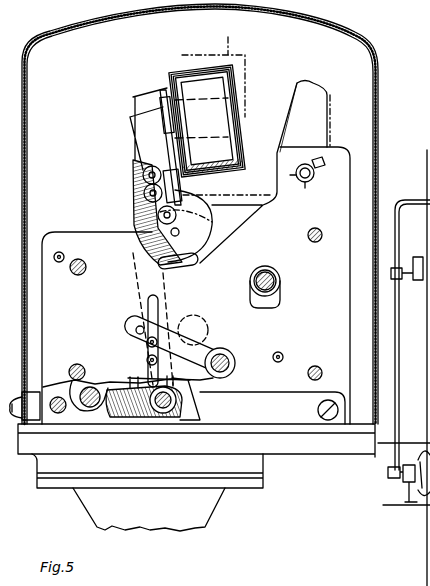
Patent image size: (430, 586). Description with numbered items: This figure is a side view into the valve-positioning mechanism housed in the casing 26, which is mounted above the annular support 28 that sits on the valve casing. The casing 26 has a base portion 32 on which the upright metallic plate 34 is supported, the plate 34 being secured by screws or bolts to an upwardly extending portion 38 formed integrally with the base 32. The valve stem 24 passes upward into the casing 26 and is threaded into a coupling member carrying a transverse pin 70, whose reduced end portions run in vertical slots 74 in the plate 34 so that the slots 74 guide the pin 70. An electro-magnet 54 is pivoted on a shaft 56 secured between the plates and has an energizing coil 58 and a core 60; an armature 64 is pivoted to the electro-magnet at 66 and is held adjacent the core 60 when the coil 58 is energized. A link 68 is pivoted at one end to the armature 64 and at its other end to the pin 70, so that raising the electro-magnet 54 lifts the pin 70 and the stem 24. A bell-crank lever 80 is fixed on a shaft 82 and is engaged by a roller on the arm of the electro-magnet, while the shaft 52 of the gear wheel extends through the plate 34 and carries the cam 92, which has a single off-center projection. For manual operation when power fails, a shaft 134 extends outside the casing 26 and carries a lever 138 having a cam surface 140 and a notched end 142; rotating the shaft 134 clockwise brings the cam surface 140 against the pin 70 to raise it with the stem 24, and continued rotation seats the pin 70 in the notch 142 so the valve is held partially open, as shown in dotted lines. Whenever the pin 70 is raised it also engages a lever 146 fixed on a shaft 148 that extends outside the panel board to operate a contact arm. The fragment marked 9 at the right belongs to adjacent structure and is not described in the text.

The casing 26 is at (381, 118).
The base portion 32 is at (298, 447).
The annular support 28 is at (98, 503).
The metallic plate 34 is at (345, 173).
The electro-magnet 54 is at (277, 93).
The shaft 56 is at (307, 188).
The energizing coil 58 is at (207, 80).
The core 60 is at (243, 117).
The armature 64 is at (130, 117).
The link 68 is at (133, 226).
The pivot 66 is at (179, 232).
The bell-crank lever 80 is at (204, 261).
The slots 74 is at (160, 303).
The pin 70 is at (134, 328).
The lever 146 is at (175, 338).
The shaft 148 is at (234, 362).
The lever 138 is at (147, 355).
The cam surface 140 is at (146, 363).
The shaft 134 is at (190, 408).
The stem 24 is at (192, 382).
The upwardly extending portion 38 is at (282, 402).
The shaft 82 is at (90, 404).
The notched end 142 is at (110, 412).
The shaft 52 is at (280, 282).
The cam 92 is at (274, 301).
The motor 9 is at (410, 475).